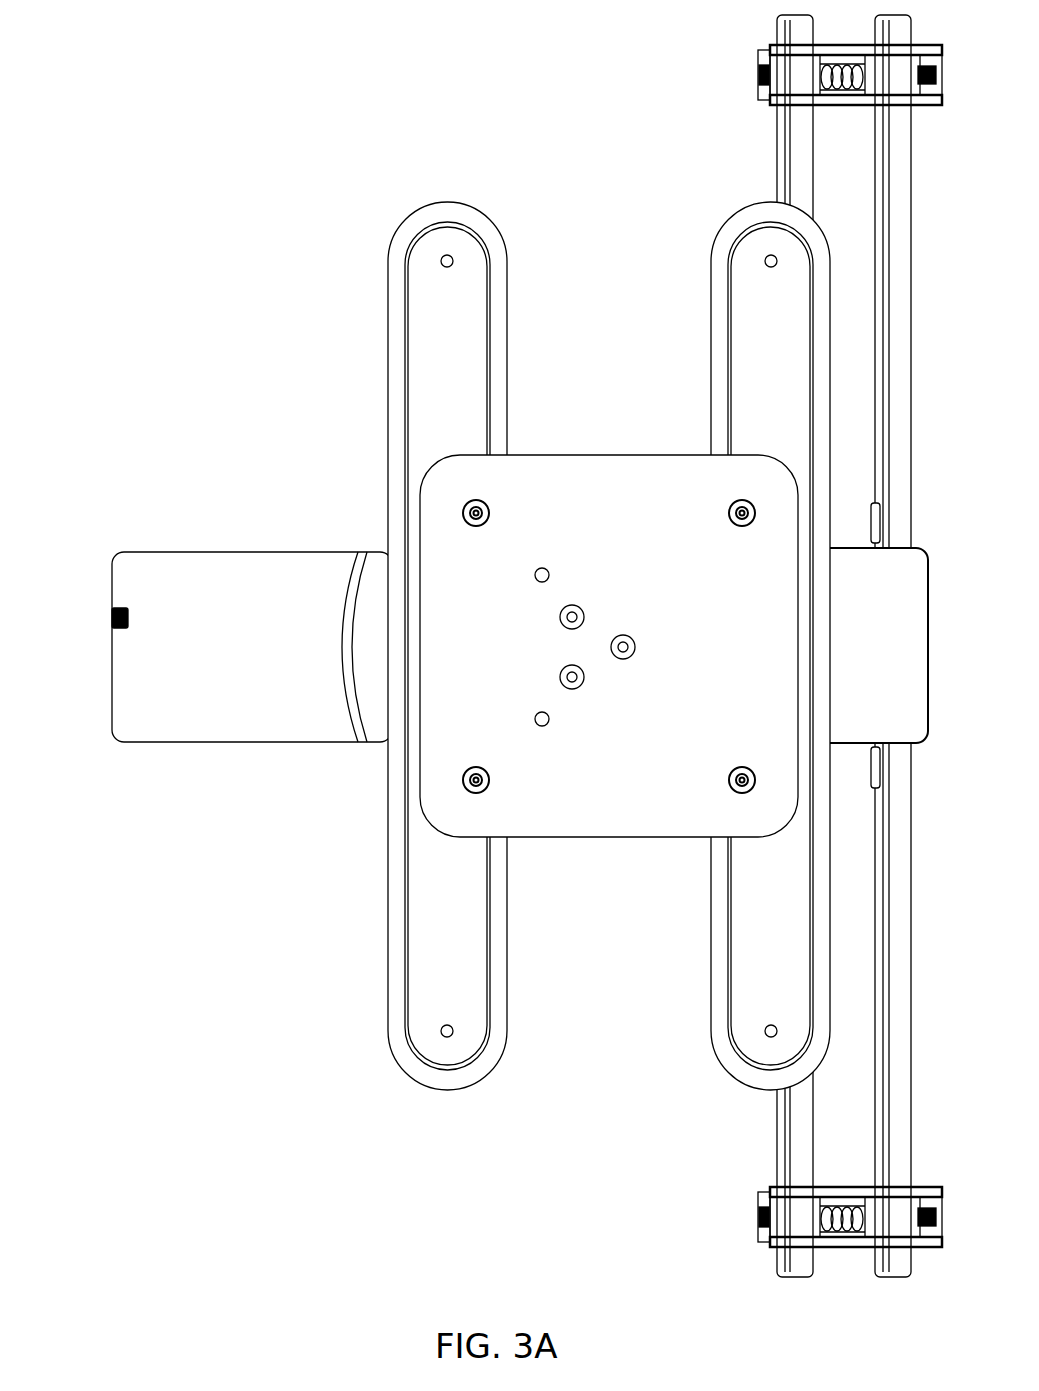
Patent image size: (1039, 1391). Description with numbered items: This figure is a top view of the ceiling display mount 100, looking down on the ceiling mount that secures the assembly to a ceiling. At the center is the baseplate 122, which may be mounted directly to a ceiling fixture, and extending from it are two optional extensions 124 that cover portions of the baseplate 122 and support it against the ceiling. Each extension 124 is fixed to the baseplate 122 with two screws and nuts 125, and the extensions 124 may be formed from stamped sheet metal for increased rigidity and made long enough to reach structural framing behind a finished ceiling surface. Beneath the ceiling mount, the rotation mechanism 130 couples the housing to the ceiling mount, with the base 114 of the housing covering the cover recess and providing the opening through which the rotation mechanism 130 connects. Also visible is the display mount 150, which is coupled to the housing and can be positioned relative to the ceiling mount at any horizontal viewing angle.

The ceiling display mount 100 is at (99, 95).
The base 114 is at (262, 664).
The baseplate 122 is at (627, 819).
The extensions 124 is at (466, 364).
The screws and nuts 125 is at (727, 515).
The rotation mechanism 130 is at (350, 497).
The display mount 150 is at (776, 177).